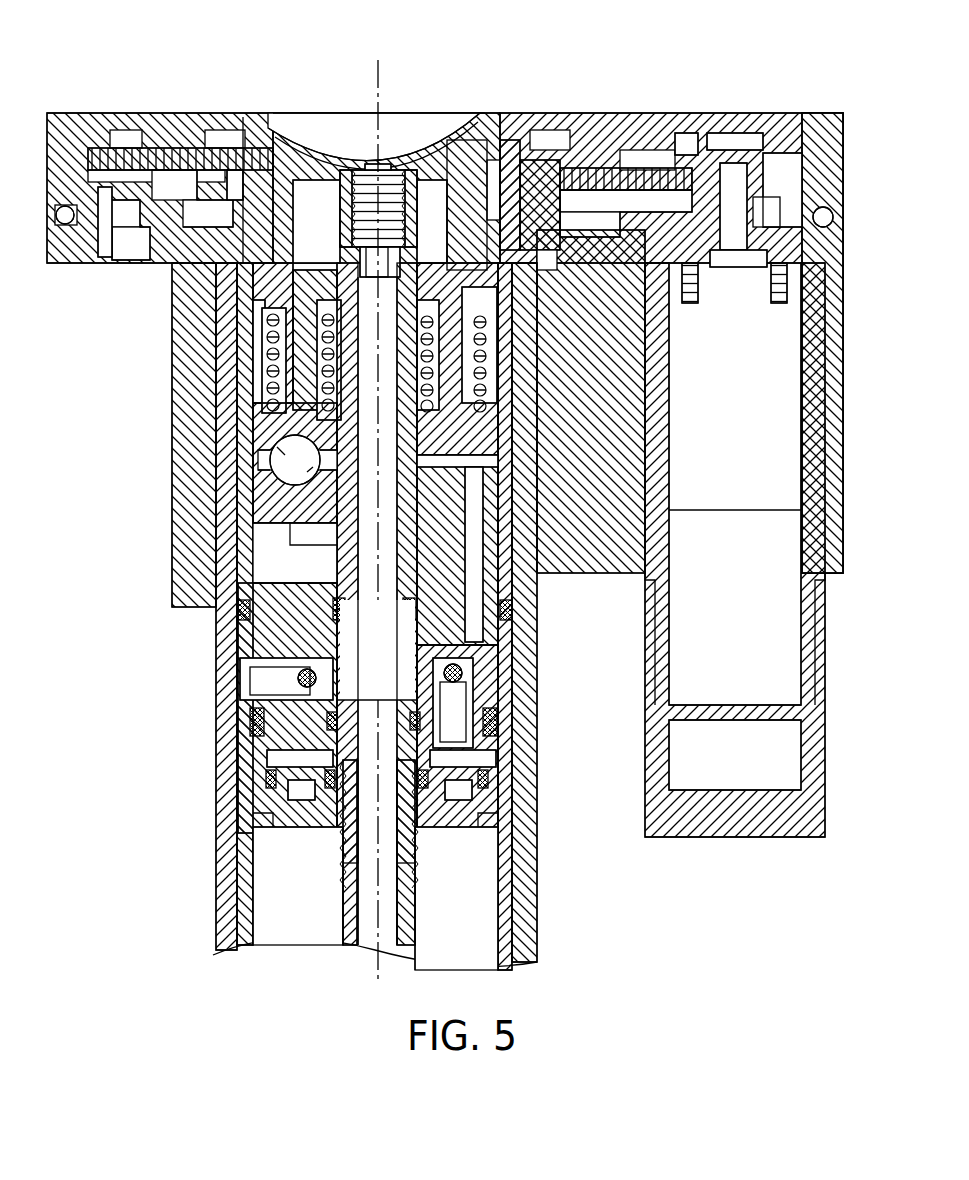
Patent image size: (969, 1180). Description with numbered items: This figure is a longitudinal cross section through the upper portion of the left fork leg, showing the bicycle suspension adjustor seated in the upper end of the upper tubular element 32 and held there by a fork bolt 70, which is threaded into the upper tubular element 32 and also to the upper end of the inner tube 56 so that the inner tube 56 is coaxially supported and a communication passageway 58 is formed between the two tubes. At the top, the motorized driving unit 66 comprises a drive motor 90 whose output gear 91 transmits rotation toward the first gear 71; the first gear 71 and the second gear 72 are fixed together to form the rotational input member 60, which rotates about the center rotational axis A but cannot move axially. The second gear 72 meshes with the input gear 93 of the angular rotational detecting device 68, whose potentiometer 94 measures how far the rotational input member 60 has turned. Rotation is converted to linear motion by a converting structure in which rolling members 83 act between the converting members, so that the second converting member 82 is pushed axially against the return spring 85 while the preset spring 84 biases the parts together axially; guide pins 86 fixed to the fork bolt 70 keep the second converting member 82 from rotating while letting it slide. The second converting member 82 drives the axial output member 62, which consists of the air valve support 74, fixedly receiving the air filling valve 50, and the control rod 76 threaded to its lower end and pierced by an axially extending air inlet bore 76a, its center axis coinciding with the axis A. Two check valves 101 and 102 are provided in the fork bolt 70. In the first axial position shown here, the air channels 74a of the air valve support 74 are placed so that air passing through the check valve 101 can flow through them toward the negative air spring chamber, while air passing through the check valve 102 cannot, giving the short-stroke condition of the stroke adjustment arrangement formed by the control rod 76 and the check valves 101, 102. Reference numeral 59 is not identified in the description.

The angular rotational detecting device 68 is at (91, 80).
The input gear 93 is at (120, 160).
The potentiometer 94 is at (130, 215).
The air filling valve 50 is at (398, 170).
The center rotational axis A is at (378, 71).
The motorized driving unit 66 is at (600, 96).
The output gear 91 is at (688, 165).
The rotational input member 60 is at (547, 70).
The second gear 72 is at (490, 140).
The first gear 71 is at (520, 160).
The fork bolt 70 is at (540, 220).
The drive motor 90 is at (730, 632).
The upper tubular element 32 is at (215, 344).
The outer tube 59 is at (226, 867).
The communication passageway 58 is at (512, 861).
The inner tube 56 is at (520, 911).
The air valve support 74 is at (320, 424).
The return spring 85 is at (268, 337).
The preset spring 84 is at (268, 375).
The guide pins 86 is at (472, 580).
The second converting member 82 is at (270, 489).
The rolling members 83 is at (290, 451).
The axial output member 62 is at (320, 555).
The check valve 101 is at (236, 664).
The check valve 102 is at (478, 679).
The air channels 74a is at (405, 704).
The control rod 76 is at (342, 917).
The air inlet bore 76a is at (392, 909).